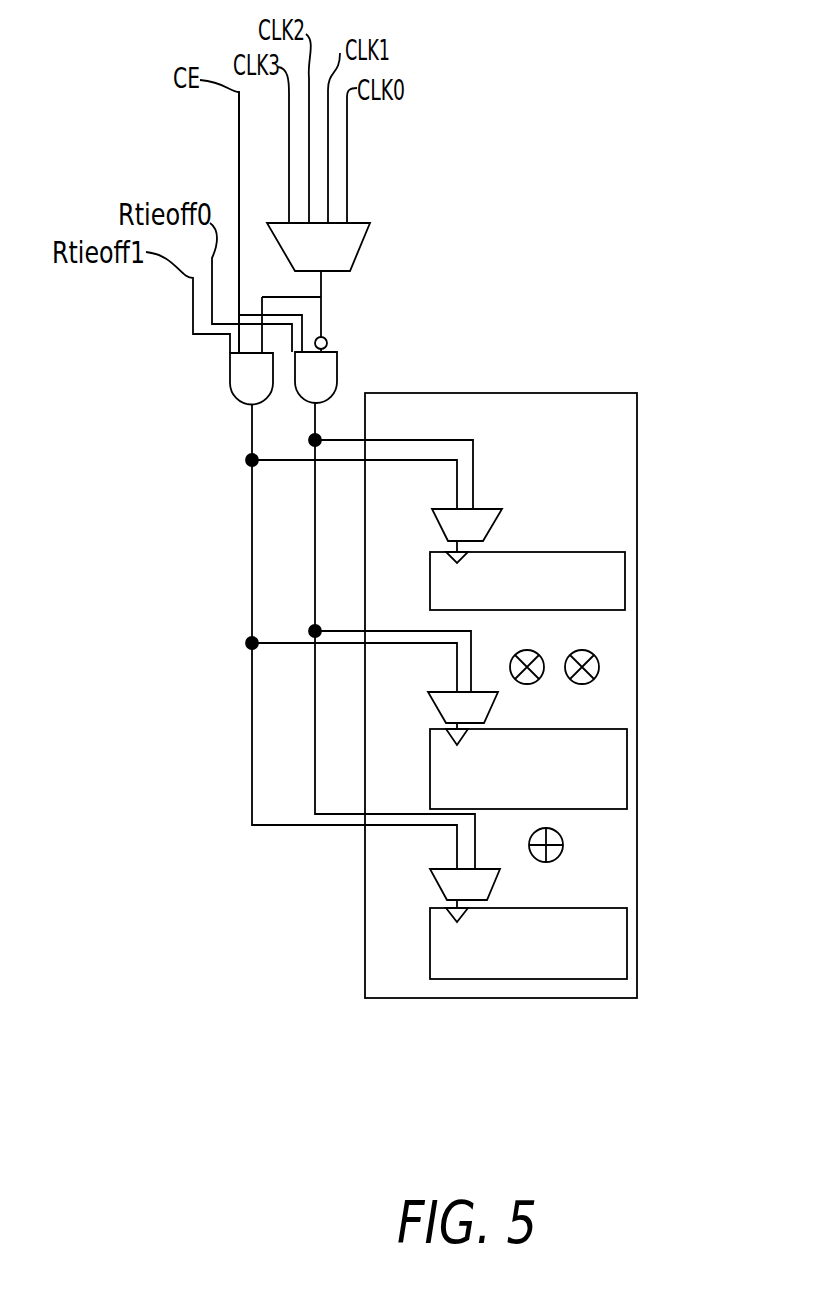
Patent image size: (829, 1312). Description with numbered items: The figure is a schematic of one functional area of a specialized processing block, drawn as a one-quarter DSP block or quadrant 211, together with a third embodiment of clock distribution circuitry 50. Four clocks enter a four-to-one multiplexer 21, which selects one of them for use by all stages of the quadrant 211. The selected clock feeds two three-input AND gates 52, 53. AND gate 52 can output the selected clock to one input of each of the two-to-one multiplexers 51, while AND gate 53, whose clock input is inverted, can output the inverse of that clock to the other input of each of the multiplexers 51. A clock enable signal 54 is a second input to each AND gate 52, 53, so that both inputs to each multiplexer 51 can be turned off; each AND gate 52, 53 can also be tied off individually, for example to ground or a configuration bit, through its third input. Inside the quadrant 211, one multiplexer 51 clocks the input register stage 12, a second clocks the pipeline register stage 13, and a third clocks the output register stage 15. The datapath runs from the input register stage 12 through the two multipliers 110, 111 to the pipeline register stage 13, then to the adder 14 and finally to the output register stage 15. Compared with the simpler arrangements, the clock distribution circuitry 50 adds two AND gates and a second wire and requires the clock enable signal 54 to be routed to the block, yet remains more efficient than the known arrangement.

The clock distribution circuitry 50 is at (452, 228).
The clock enable signal 54 is at (239, 148).
The 4:1 multiplexer 21 is at (355, 263).
The AND gate 52 is at (238, 400).
The AND gate 53 is at (338, 372).
The 2:1 multiplexer 51 is at (438, 529).
The input register stage 12 is at (647, 553).
The pipeline register stage 13 is at (647, 730).
The output register stage 15 is at (647, 908).
The multiplier 110 is at (527, 650).
The multiplier 111 is at (583, 684).
The adder 14 is at (563, 852).
The quadrant 211 is at (608, 998).